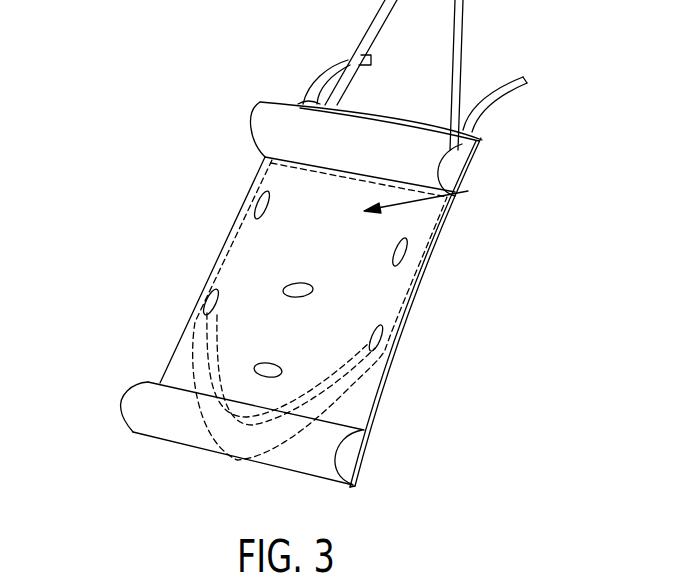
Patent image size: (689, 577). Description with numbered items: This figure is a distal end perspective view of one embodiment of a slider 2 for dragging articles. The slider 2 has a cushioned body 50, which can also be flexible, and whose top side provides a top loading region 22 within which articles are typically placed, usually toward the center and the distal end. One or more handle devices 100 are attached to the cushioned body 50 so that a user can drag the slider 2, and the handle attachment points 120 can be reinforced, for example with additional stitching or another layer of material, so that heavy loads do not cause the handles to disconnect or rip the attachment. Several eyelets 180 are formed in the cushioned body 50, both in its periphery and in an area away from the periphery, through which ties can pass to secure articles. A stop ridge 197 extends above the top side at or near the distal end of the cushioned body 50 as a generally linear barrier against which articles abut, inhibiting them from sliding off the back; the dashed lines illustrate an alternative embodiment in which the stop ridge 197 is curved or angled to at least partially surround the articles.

The slider 2 is at (296, 243).
The top loading region 22 is at (302, 262).
The cushioned body 50 is at (468, 191).
The handle device 100 is at (467, 34).
The handle attachment point 120 is at (319, 102).
The eyelet 180 is at (258, 204).
The stop ridge 197 is at (342, 377).